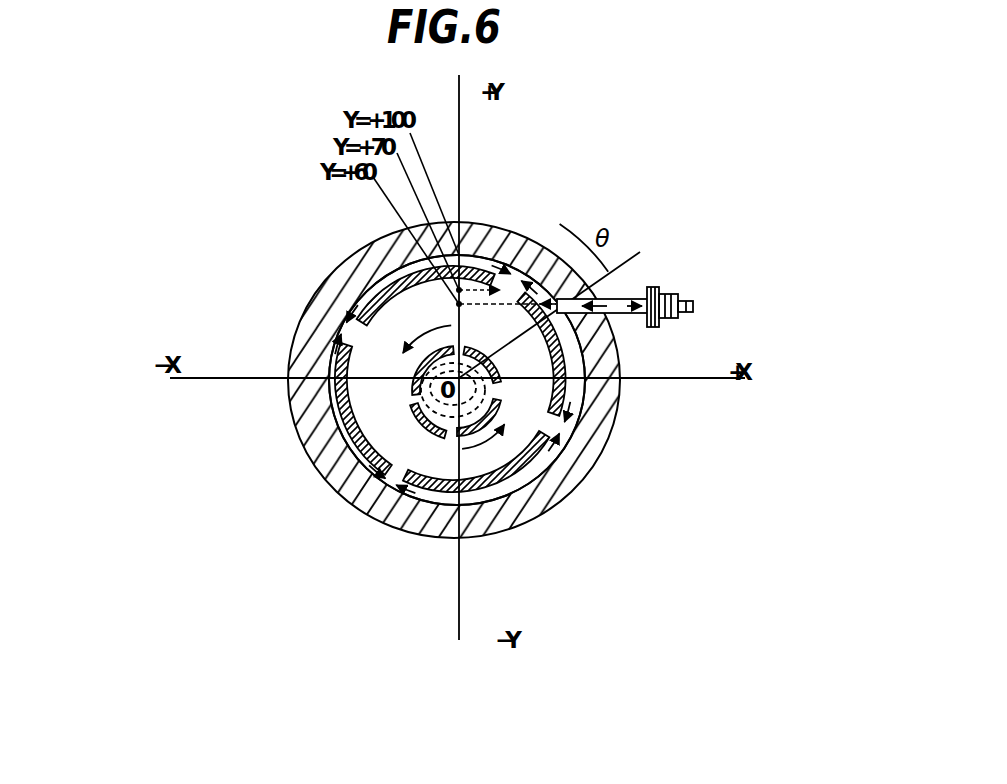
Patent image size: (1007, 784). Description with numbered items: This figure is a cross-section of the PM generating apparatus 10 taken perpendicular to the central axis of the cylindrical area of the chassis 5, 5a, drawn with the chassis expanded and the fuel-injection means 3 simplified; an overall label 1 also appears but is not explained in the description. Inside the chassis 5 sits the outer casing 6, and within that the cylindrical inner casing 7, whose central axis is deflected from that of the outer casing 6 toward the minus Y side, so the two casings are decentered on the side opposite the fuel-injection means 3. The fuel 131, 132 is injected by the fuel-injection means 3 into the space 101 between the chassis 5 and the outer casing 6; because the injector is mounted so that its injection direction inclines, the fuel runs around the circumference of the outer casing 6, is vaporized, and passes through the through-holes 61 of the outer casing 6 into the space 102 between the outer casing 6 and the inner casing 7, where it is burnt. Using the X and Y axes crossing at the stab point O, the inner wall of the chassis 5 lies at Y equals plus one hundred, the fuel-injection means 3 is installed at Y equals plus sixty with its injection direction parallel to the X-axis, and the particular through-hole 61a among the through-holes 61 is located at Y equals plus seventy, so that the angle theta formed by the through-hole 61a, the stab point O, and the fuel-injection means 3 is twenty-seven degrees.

The hollow fiber membrane module / device 1 is at (282, 194).
The PM generating apparatus 10 is at (696, 216).
The fuel-injection means 3 is at (681, 298).
The chassis 5 is at (454, 369).
The housing wall 5a is at (392, 252).
The outer casing 6 is at (308, 430).
The inner casing 7 is at (365, 456).
The through-holes 61 is at (443, 373).
The through-hole 61a is at (342, 318).
The space between the chassis and the outer casing 101 is at (380, 283).
The space between the outer casing and the inner casing 102 is at (380, 370).
The fuel 131 is at (469, 399).
The partition member 132 is at (356, 306).